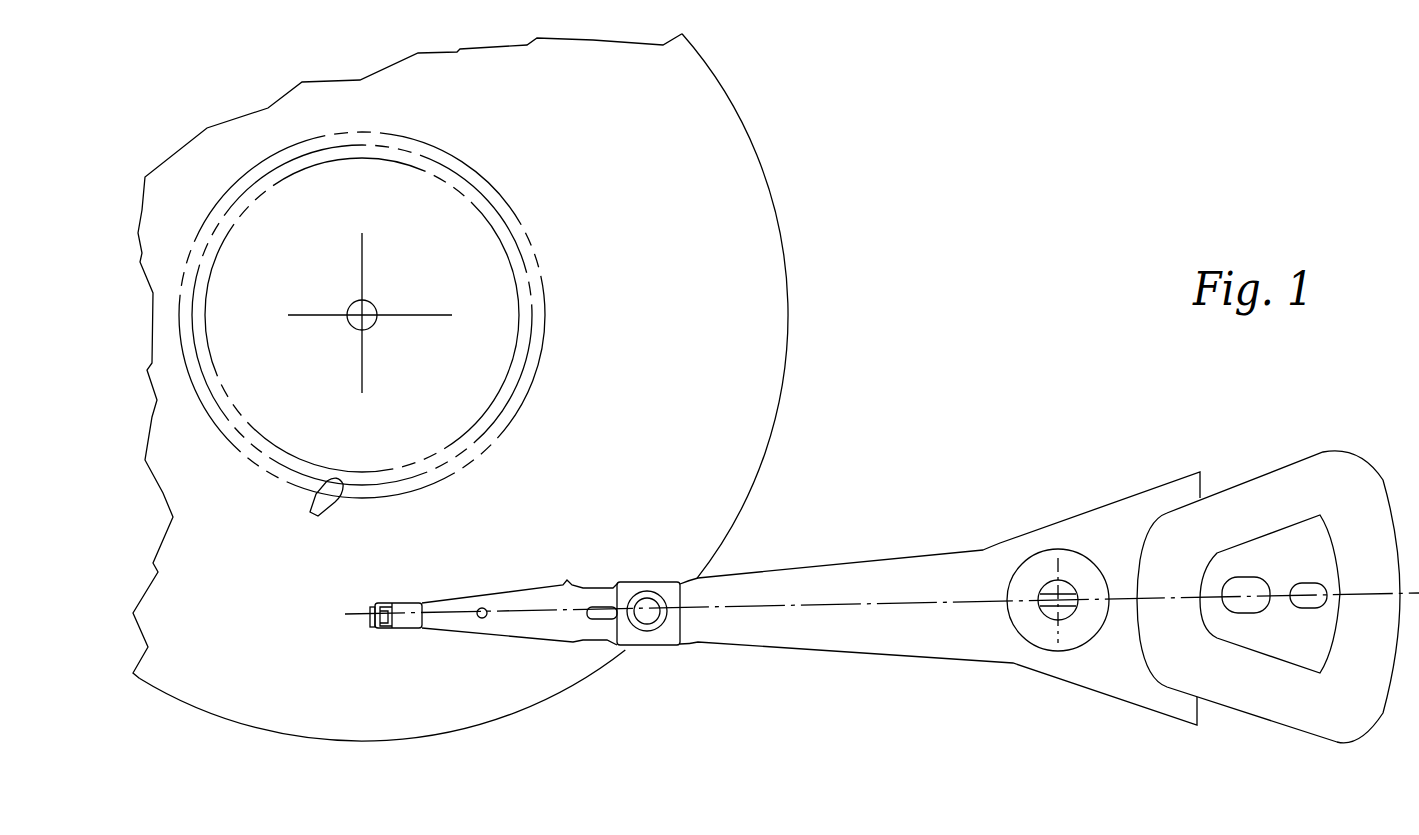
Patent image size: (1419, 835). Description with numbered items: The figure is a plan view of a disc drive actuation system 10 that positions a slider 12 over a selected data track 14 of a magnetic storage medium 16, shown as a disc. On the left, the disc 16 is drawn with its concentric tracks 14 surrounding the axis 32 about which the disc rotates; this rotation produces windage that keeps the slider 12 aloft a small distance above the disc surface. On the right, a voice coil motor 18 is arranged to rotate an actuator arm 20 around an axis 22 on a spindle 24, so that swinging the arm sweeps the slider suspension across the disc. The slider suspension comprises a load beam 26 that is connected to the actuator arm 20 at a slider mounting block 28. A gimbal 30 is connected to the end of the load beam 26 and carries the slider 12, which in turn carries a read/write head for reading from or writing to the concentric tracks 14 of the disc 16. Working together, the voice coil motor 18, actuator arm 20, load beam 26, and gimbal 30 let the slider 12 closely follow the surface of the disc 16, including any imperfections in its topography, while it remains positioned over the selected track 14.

The disc drive actuation system 10 is at (978, 440).
The slider 12 is at (368, 620).
The data track 14 is at (362, 345).
The magnetic storage medium 16 is at (772, 420).
The voice coil motor 18 is at (1363, 452).
The actuator arm 20 is at (805, 567).
The axis 22 is at (1047, 615).
The spindle 24 is at (1065, 585).
The load beam 26 is at (492, 596).
The slider mounting block 28 is at (647, 580).
The gimbal 30 is at (393, 603).
The axis 32 is at (375, 304).